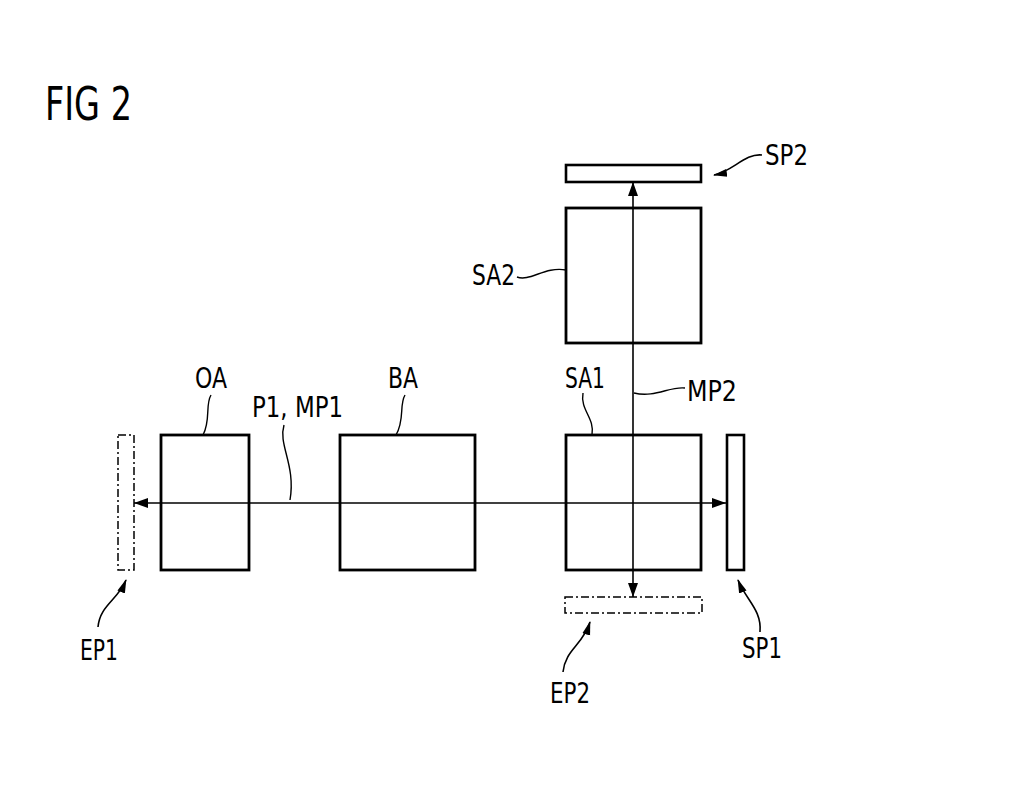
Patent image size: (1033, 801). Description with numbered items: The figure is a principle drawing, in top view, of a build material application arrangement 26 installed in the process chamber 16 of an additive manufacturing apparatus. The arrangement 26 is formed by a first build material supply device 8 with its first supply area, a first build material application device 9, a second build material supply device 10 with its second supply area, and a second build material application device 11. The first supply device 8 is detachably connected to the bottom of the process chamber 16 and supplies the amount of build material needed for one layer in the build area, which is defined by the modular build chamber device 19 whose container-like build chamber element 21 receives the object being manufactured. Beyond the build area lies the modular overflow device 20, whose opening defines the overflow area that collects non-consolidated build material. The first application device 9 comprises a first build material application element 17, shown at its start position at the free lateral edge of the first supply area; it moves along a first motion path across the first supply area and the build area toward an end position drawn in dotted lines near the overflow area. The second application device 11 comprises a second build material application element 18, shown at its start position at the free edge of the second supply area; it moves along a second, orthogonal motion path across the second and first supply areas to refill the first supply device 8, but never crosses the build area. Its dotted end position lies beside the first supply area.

The first build material supply device 8 is at (675, 580).
The first build material application device 9 is at (754, 484).
The second build material supply device 10 is at (715, 272).
The second build material application device 11 is at (600, 156).
The process chamber 16 is at (291, 269).
The first build material application element 17 is at (126, 435).
The second build material application element 18 is at (651, 614).
The build chamber device 19 is at (383, 580).
The overflow device 20 is at (203, 580).
The build chamber element 21 is at (428, 572).
The build material application arrangement 26 is at (427, 306).